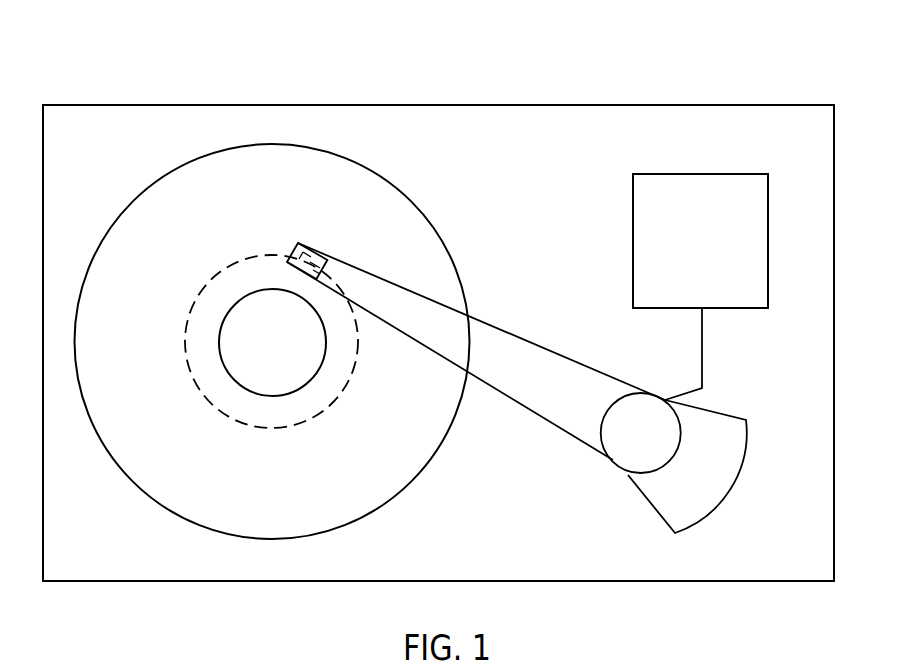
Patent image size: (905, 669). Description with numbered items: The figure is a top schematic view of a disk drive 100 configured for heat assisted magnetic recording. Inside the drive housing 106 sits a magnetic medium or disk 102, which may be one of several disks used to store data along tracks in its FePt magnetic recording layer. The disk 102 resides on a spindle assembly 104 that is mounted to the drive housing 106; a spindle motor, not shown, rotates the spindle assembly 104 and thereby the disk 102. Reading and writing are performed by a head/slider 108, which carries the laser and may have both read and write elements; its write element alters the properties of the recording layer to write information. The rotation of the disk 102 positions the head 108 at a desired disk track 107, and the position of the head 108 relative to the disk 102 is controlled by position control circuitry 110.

The disk drive 100 is at (224, 78).
The magnetic medium 102 is at (392, 183).
The spindle assembly 104 is at (289, 349).
The drive housing 106 is at (570, 105).
The track 107 is at (248, 258).
The head/slider 108 is at (313, 257).
The position control circuitry 110 is at (714, 254).